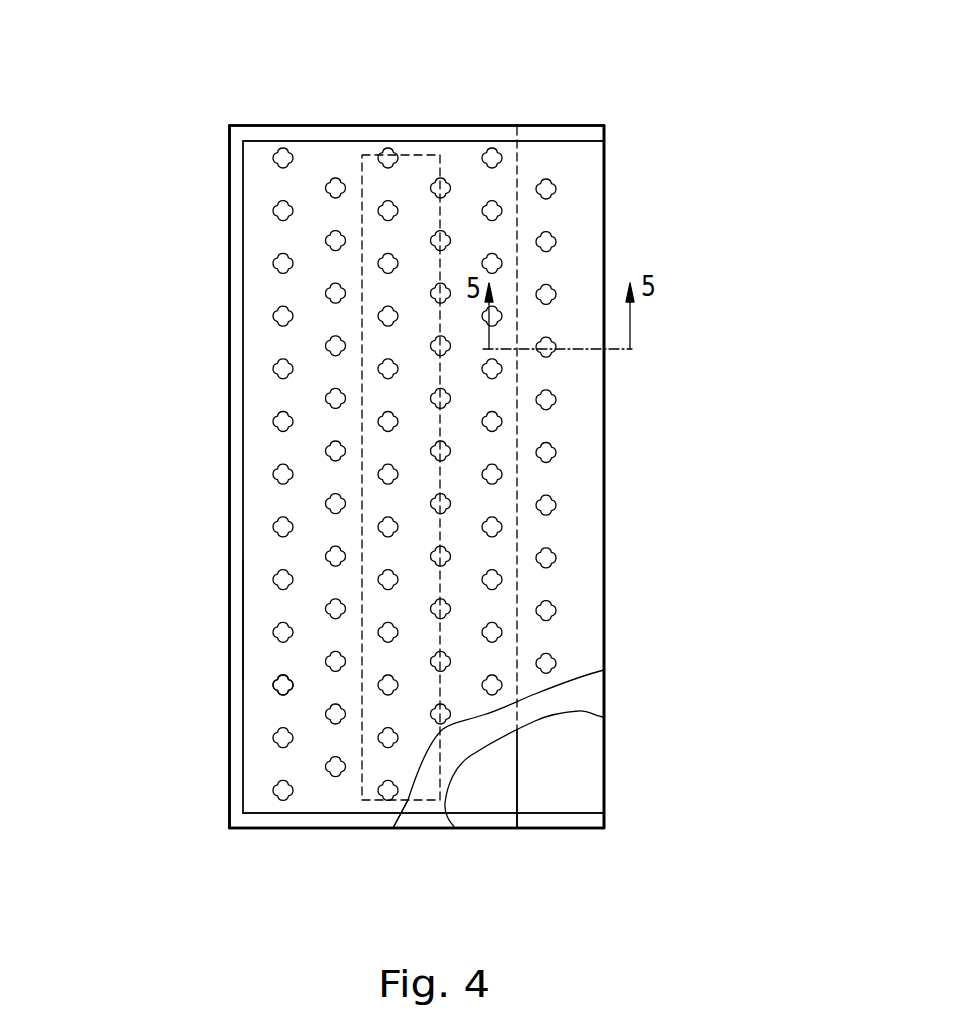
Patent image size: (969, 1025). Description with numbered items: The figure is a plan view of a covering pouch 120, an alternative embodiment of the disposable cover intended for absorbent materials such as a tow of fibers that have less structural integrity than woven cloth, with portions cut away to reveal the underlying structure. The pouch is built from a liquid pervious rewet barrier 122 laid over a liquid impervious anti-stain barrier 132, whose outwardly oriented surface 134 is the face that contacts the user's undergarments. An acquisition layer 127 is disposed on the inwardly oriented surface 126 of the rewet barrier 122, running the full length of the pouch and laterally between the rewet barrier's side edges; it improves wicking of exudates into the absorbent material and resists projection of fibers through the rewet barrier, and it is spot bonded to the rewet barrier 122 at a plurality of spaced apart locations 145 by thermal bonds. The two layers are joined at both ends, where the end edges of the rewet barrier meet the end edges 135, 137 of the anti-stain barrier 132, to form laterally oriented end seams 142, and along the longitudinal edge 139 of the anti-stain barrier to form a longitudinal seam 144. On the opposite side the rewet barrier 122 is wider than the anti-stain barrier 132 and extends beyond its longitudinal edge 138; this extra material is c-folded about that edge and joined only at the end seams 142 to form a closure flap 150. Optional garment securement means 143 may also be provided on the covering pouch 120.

The covering pouch 120 is at (616, 224).
The rewet barrier 122 is at (545, 476).
The inwardly oriented surface of rewet barrier 126 is at (405, 806).
The acquisition layer 127 is at (573, 697).
The anti-stain barrier 132 is at (557, 793).
The outwardly oriented surface of anti-stain barrier 134 is at (640, 653).
The end edge of anti-stain barrier 135 is at (361, 828).
The end edge of anti-stain barrier 137 is at (300, 125).
The longitudinal edge of anti-stain barrier 138 is at (605, 405).
The longitudinal edge of anti-stain barrier 139 is at (229, 515).
The end seams 142 is at (453, 133).
The garment securement means 143 is at (382, 398).
The longitudinal seam 144 is at (243, 620).
The spaced apart locations 145 is at (283, 692).
The closure flap 150 is at (537, 800).